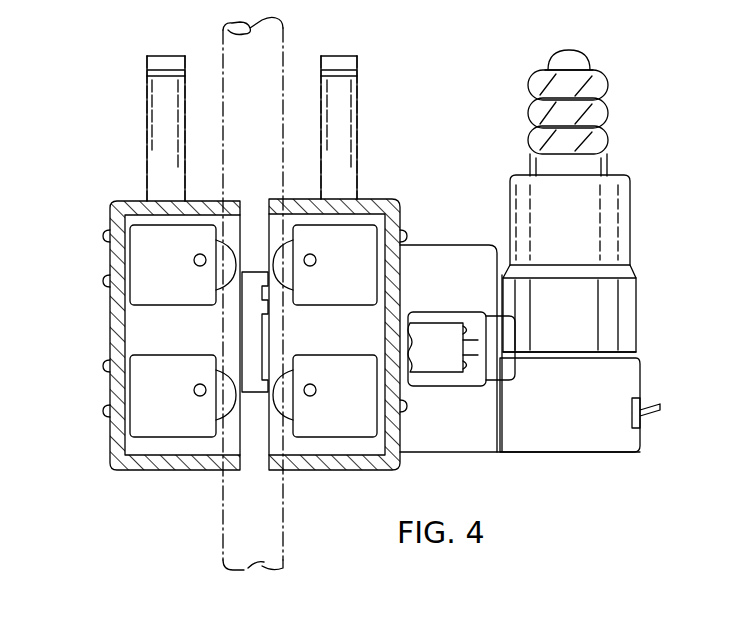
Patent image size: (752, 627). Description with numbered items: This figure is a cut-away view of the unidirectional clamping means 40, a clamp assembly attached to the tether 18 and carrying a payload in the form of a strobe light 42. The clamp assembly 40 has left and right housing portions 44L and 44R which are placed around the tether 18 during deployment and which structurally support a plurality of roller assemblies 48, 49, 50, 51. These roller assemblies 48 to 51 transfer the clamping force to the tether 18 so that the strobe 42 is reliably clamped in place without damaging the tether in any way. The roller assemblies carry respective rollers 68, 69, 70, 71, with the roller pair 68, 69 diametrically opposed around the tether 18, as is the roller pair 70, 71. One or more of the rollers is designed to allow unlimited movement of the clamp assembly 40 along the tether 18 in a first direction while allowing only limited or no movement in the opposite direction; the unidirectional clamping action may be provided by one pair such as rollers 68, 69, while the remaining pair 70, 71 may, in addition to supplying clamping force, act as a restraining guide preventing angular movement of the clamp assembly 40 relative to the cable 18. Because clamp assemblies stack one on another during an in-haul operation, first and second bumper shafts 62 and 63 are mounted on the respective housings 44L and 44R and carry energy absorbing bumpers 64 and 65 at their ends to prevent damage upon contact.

The tether 18 is at (246, 24).
The unidirectional clamping means 40 is at (69, 337).
The strobe light 42 is at (632, 243).
The left housing portion 44L is at (113, 206).
The right housing portion 44R is at (396, 207).
The roller assembly 48 is at (183, 278).
The roller assembly 49 is at (325, 278).
The roller assembly 50 is at (183, 380).
The roller assembly 51 is at (325, 380).
The first bumper shaft 62 is at (163, 116).
The second bumper shaft 63 is at (338, 112).
The energy absorbing bumper 64 is at (166, 62).
The energy absorbing bumper 65 is at (340, 62).
The roller 68 is at (218, 254).
The roller 69 is at (280, 254).
The roller 70 is at (215, 394).
The roller 71 is at (283, 394).